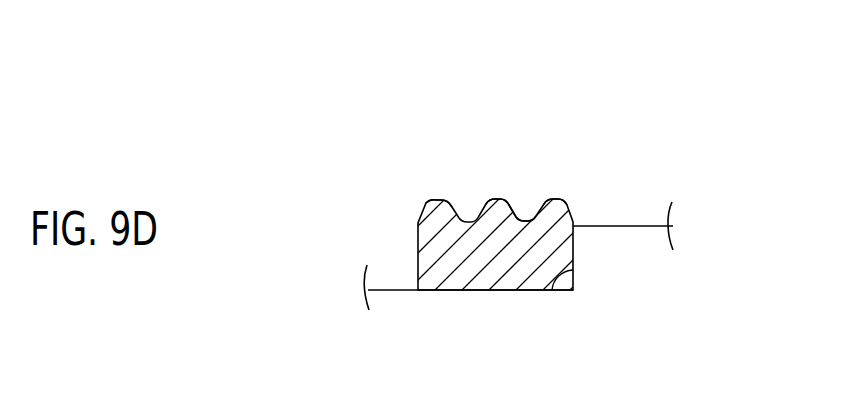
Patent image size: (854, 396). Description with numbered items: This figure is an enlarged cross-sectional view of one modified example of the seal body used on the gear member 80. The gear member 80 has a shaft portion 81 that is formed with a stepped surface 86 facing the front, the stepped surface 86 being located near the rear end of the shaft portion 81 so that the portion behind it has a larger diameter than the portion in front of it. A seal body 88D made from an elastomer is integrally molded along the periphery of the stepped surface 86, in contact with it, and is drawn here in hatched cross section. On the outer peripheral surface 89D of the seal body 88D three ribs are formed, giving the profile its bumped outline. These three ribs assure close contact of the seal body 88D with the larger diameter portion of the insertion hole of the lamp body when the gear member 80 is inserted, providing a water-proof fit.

The gear member 80 is at (613, 232).
The shaft portion 81 is at (397, 292).
The stepped surface 86 is at (552, 290).
The seal body 88D is at (418, 258).
The outer peripheral surface 89D is at (521, 216).